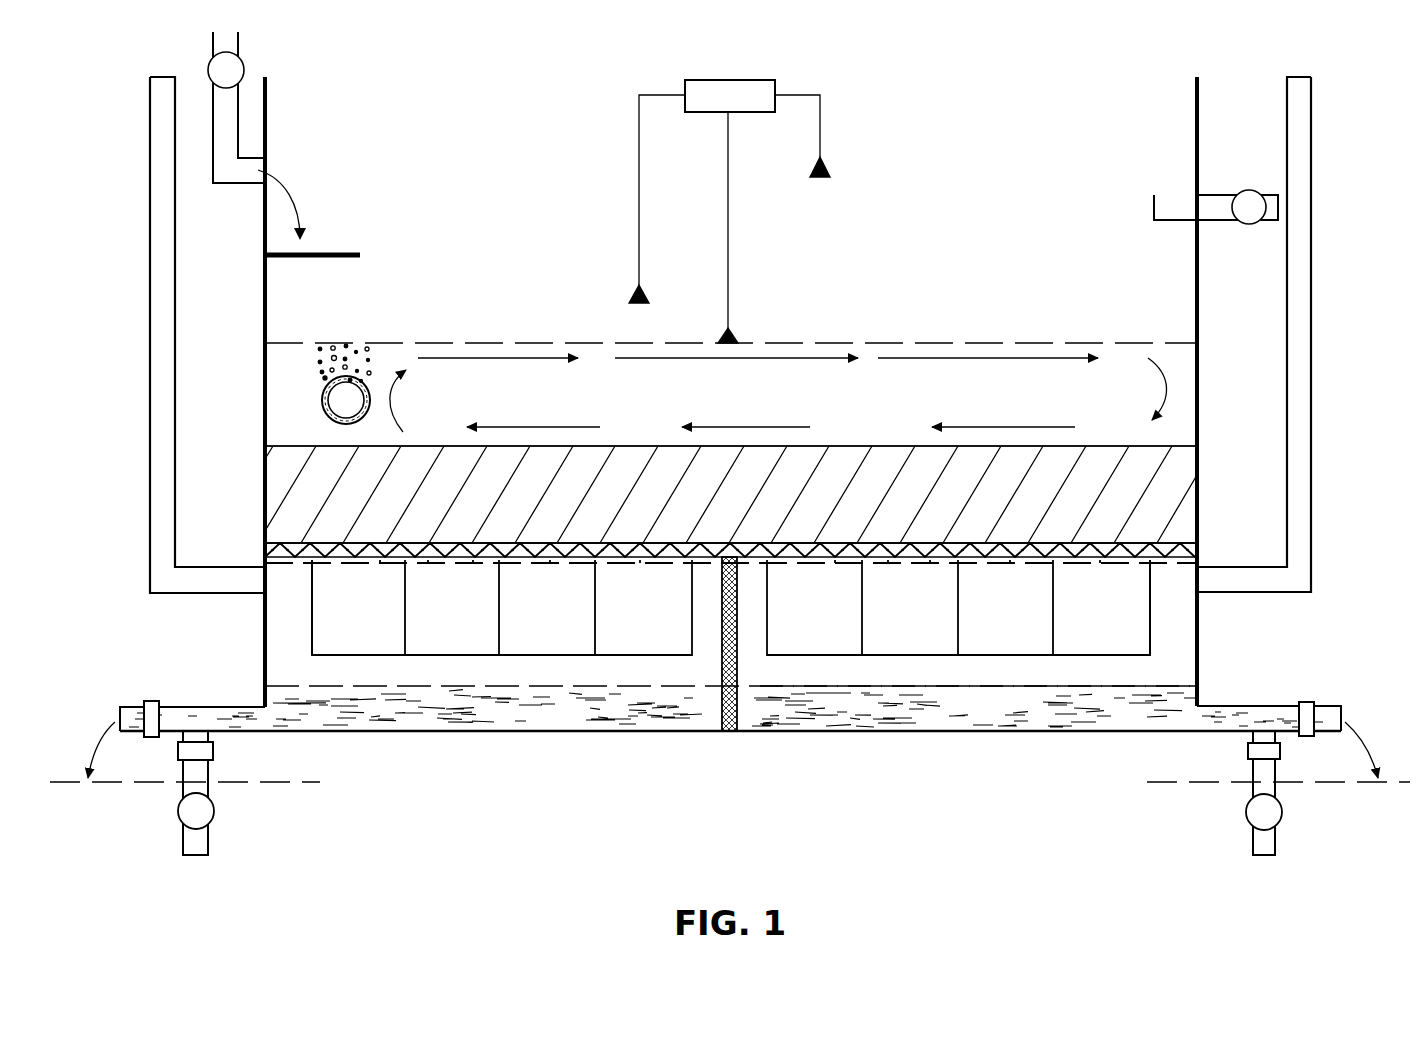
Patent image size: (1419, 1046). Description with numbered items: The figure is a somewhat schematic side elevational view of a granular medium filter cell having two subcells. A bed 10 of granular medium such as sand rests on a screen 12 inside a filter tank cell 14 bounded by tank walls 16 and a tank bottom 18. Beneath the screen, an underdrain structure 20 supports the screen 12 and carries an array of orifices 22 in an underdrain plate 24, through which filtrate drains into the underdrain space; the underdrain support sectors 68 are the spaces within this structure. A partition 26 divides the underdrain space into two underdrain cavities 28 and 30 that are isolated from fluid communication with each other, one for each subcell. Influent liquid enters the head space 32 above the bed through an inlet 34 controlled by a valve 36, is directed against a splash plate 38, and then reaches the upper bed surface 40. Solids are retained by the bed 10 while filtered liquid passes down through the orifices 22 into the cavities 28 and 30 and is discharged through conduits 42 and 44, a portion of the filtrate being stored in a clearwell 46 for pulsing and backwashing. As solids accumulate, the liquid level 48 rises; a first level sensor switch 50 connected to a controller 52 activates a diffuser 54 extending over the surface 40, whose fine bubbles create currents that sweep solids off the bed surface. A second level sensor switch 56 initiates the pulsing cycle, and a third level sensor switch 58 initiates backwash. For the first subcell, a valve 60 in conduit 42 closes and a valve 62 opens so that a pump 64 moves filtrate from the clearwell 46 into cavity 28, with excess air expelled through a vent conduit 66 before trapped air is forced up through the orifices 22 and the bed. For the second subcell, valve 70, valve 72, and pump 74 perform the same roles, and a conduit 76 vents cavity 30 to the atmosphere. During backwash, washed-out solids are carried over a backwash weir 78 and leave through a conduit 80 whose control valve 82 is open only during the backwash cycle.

The bed 10 is at (892, 458).
The screen 12 is at (263, 556).
The filter tank cell 14 is at (1218, 95).
The tank walls 16 is at (265, 314).
The tank bottom 18 is at (600, 734).
The underdrain structure 20 is at (310, 628).
The orifices 22 is at (380, 565).
The underdrain plate 24 is at (550, 565).
The partition 26 is at (738, 703).
The underdrain cavity 28 is at (470, 705).
The underdrain cavity 30 is at (930, 706).
The head space 32 is at (490, 295).
The inlet 34 is at (238, 113).
The valve 36 is at (245, 63).
The splash plate 38 is at (325, 252).
The upper bed surface 40 is at (443, 446).
The conduit 42 is at (138, 705).
The conduit 44 is at (1328, 705).
The clearwell 46 is at (370, 850).
The liquid level 48 is at (388, 342).
The first level sensor switch 50 is at (735, 336).
The controller 52 is at (735, 80).
The diffuser 54 is at (332, 416).
The second level sensor switch 56 is at (636, 292).
The third level sensor switch 58 is at (826, 166).
The valve 60 is at (151, 700).
The valve 62 is at (214, 752).
The pump 64 is at (178, 813).
The vent conduit 66 is at (151, 318).
The underdrain support sectors 68 is at (342, 645).
The valve 70 is at (1310, 702).
The valve 72 is at (1247, 750).
The pump 74 is at (1283, 812).
The conduit 76 is at (1311, 475).
The backwash weir 78 is at (1155, 205).
The conduit 80 is at (1232, 193).
The control valve 82 is at (1247, 223).